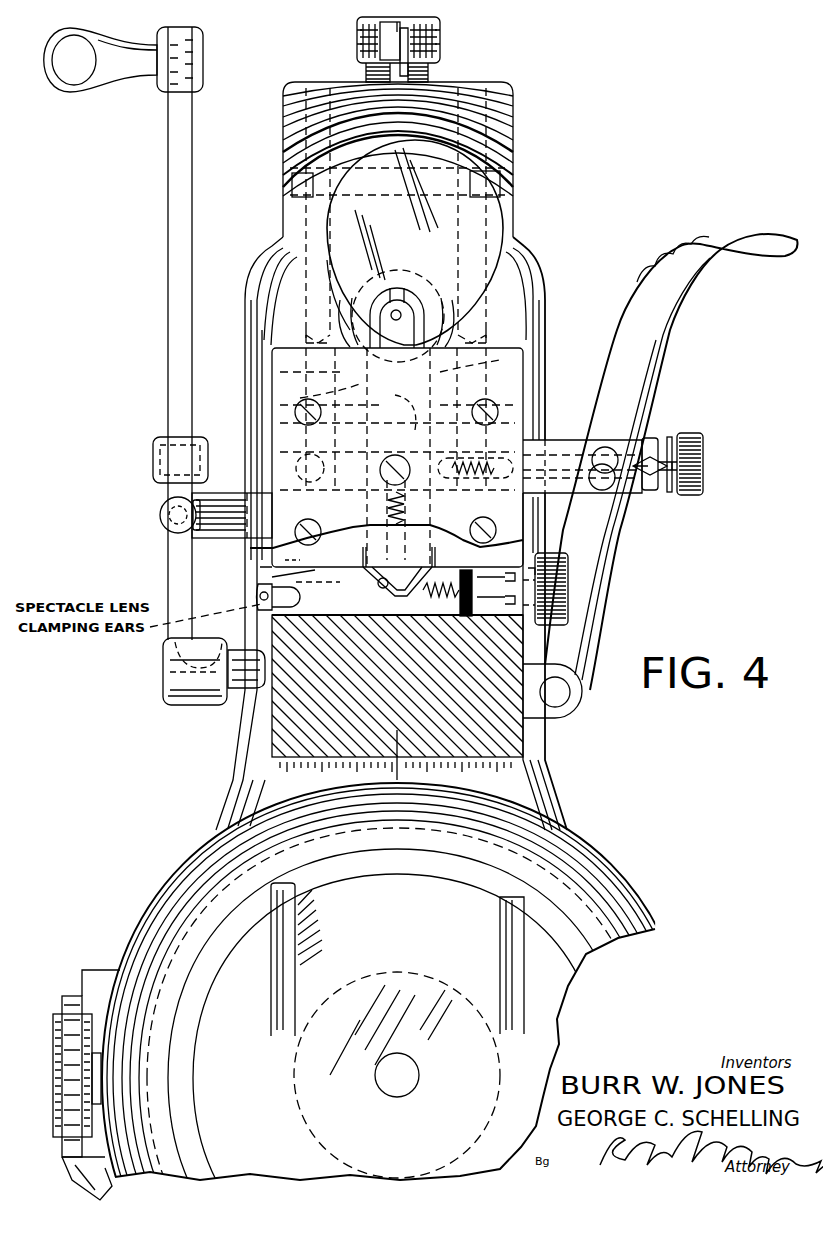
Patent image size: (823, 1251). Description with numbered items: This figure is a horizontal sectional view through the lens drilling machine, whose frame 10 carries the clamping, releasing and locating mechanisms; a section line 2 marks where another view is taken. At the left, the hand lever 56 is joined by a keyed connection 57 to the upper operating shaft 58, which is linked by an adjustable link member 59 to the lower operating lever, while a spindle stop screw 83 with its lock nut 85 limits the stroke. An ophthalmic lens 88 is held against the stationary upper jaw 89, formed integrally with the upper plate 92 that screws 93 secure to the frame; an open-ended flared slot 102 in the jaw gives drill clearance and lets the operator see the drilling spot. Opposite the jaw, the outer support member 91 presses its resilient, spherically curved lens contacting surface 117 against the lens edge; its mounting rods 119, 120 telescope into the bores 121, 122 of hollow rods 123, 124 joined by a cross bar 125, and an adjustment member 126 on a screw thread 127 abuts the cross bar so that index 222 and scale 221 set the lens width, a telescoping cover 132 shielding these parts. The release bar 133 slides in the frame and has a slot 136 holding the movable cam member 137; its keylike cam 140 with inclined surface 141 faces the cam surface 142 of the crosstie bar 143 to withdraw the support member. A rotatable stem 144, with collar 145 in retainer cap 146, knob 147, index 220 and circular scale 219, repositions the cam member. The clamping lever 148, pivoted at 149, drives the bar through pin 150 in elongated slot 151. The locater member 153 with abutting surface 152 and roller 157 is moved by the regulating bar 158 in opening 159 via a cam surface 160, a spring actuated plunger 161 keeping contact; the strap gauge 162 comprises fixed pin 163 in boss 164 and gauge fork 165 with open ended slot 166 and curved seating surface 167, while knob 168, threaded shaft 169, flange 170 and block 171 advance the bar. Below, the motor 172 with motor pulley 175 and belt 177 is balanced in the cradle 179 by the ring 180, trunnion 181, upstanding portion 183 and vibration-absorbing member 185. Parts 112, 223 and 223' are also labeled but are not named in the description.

The section line 2 is at (397, 404).
The frame 10 is at (548, 291).
The hand lever 56 is at (183, 173).
The keyed connection 57 is at (163, 670).
The upper operating shaft 58 is at (240, 685).
The adjustable link member 59 is at (153, 468).
The spindle stop screw 83 is at (160, 515).
The lock nut 85 is at (164, 524).
The ophthalmic lens 88 is at (452, 162).
The stationary upper jaw 89 is at (417, 300).
The outer support member 91 is at (514, 91).
The upper plate 92 is at (280, 361).
The screws 93 is at (271, 548).
The open-ended flared slot 102 is at (397, 290).
The screw 112 is at (380, 476).
The lens contacting surface 117 is at (510, 150).
The mounting rod 119 is at (330, 97).
The mounting rod 120 is at (460, 98).
The bore 121 is at (300, 314).
The bore 122 is at (492, 310).
The hollow rod 123 is at (300, 373).
The hollow rod 124 is at (486, 362).
The cross bar 125 is at (510, 173).
The adjustment member 126 is at (442, 24).
The screw thread 127 is at (370, 74).
The telescoping cover 132 is at (515, 205).
The release bar 133 is at (574, 440).
The slot 136 is at (296, 524).
The movable cam member 137 is at (355, 470).
The keylike laterally projecting cam 140 is at (537, 430).
The inclined surface 141 is at (345, 403).
The cooperating cam surface 142 is at (412, 402).
The crosstie bar 143 is at (446, 412).
The rotatable stem 144 is at (600, 490).
The integral collar 145 is at (657, 452).
The retainer cap 146 is at (652, 438).
The knob 147 is at (706, 438).
The clamping lever 148 is at (660, 331).
The pivot 149 is at (560, 704).
The pin 150 is at (606, 448).
The elongated slot 151 is at (548, 540).
The abutting surface 152 is at (396, 329).
The locater member 153 is at (366, 379).
The antifrictional roller 157 is at (347, 558).
The regulating bar 158 is at (350, 608).
The opening 159 is at (374, 630).
The cam surface 160 is at (398, 591).
The spring actuated plunger 161 is at (372, 526).
The strap gauge 162 is at (268, 575).
The fixed upstanding pin 163 is at (280, 570).
The boss 164 is at (262, 602).
The movable gauge fork 165 is at (298, 558).
The open ended slot 166 is at (298, 595).
The curved seating surface 167 is at (262, 603).
The knob 168 is at (562, 568).
The threaded shaft 169 is at (450, 555).
The integral flange 170 is at (458, 606).
The block 171 is at (470, 533).
The motor 172 is at (210, 914).
The motor pulley 175 is at (315, 1060).
The belt 177 is at (284, 917).
The motor supporting cradle 179 is at (78, 1178).
The ring 180 is at (198, 851).
The trunnion 181 is at (96, 1084).
The upstanding portion 183 is at (74, 998).
The vibration-absorbing member 185 is at (57, 1018).
The circular scale 219 is at (672, 492).
The index 220 is at (657, 495).
The scale 221 is at (360, 42).
The index 222 is at (440, 40).
The knob 223 is at (560, 605).
The knob stem 223' is at (588, 585).